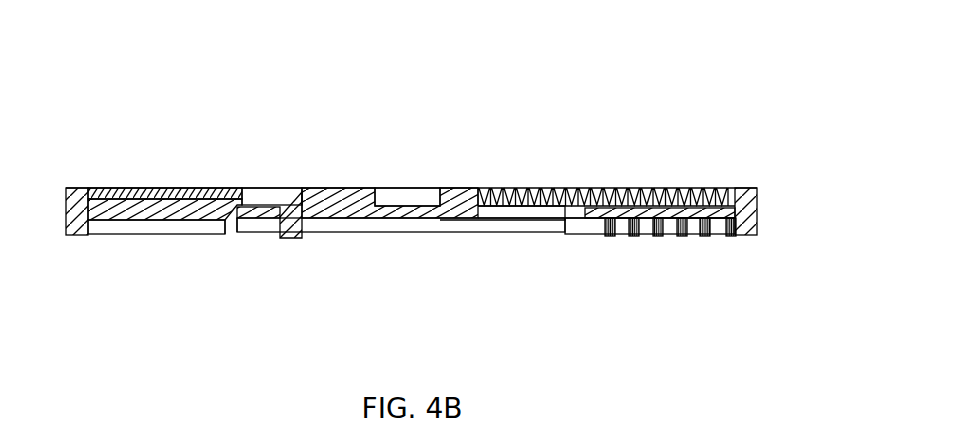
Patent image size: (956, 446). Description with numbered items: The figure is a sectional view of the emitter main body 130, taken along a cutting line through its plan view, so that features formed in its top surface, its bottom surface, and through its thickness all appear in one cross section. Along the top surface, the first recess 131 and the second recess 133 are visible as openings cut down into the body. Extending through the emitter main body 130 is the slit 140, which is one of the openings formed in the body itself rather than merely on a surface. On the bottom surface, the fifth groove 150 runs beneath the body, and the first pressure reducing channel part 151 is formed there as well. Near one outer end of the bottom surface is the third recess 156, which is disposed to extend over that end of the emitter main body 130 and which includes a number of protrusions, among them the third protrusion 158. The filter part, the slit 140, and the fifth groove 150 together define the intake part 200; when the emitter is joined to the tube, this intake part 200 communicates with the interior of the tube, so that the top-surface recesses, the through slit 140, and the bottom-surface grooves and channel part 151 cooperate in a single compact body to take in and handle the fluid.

The emitter main body 130 is at (736, 125).
The first recess 131 is at (418, 205).
The second recess 133 is at (258, 200).
The slit 140 is at (565, 220).
The fifth groove 150 is at (408, 232).
The first pressure reducing channel part 151 is at (709, 236).
The third recess 156 is at (160, 234).
The third protrusion 158 is at (230, 232).
The intake part 200 is at (626, 200).